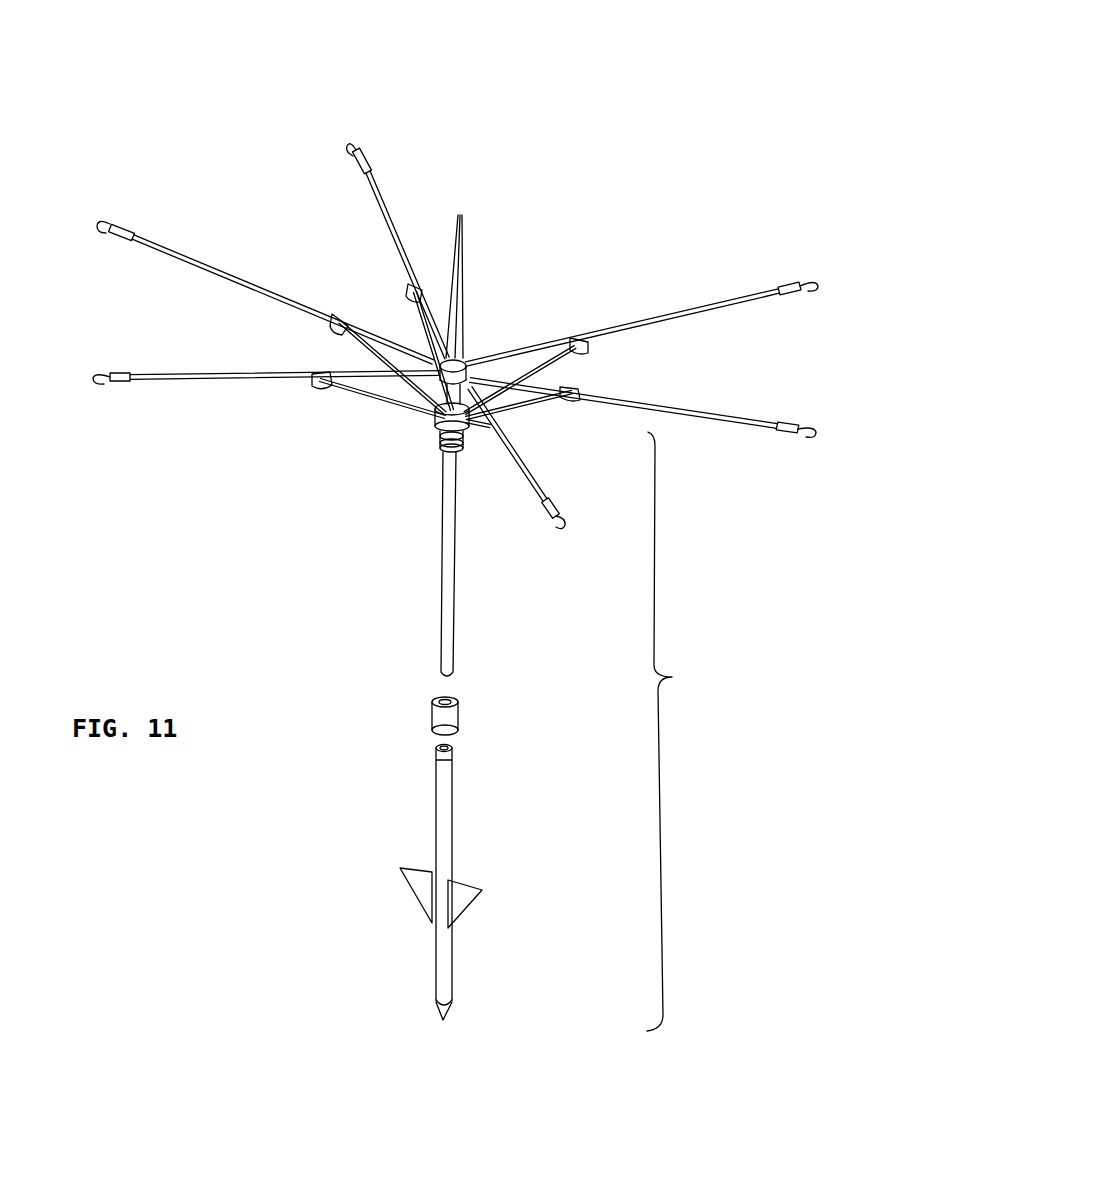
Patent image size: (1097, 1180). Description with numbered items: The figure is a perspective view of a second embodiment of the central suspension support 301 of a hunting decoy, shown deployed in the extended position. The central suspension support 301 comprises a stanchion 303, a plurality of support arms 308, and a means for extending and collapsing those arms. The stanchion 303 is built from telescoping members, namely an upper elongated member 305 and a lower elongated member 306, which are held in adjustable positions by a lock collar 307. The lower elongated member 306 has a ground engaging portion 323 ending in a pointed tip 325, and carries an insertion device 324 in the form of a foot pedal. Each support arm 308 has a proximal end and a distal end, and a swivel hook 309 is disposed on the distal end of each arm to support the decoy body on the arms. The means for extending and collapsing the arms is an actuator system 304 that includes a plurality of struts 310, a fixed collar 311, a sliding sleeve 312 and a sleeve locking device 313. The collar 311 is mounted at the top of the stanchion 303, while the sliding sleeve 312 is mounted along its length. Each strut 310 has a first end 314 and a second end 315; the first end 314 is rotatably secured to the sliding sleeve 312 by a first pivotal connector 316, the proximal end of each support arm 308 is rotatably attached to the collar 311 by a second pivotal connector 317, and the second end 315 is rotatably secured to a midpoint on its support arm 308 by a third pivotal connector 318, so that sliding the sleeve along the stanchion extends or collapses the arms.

The central suspension support 301 is at (606, 145).
The stanchion 303 is at (688, 731).
The actuator system 304 is at (484, 445).
The upper elongated member 305 is at (440, 598).
The lower elongated member 306 is at (452, 818).
The lock collar 307 is at (432, 710).
The support arm 308 is at (398, 246).
The swivel hook 309 is at (814, 430).
The strut 310 is at (388, 405).
The fixed collar 311 is at (470, 354).
The sliding sleeve 312 is at (443, 440).
The sleeve locking device 313 is at (458, 458).
The first end 314 is at (418, 420).
The second end 315 is at (395, 388).
The first pivotal connector 316 is at (438, 428).
The second pivotal connector 317 is at (468, 358).
The third pivotal connector 318 is at (572, 388).
The ground engaging portion 323 is at (440, 983).
The insertion device 324 is at (426, 890).
The pointed tip 325 is at (442, 1006).